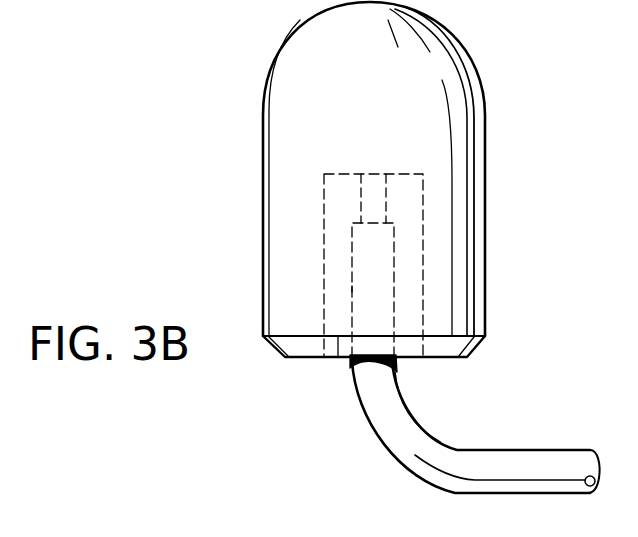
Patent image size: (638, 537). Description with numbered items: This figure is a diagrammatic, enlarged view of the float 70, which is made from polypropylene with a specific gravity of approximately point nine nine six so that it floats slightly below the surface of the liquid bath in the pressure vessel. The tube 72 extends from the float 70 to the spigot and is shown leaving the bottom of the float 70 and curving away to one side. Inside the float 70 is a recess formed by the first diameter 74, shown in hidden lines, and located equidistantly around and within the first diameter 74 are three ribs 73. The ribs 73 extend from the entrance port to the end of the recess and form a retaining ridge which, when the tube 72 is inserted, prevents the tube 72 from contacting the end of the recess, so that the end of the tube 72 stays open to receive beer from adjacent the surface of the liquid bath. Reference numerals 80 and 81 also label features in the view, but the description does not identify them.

The float 70 is at (457, 42).
The tube 72 is at (500, 448).
The ribs 73 is at (352, 288).
The first diameter 74 is at (326, 243).
The cable outlet 80 is at (338, 357).
The terminal 81 is at (352, 222).